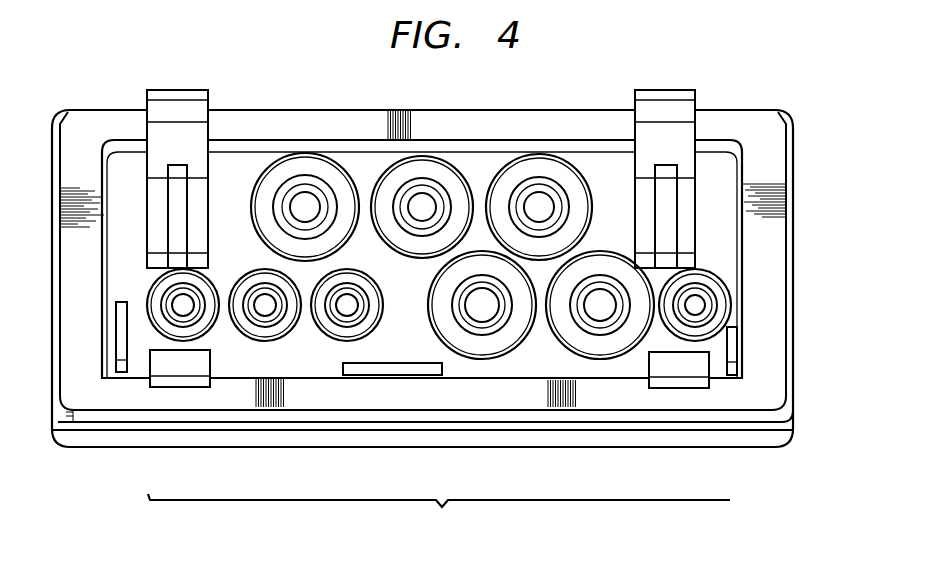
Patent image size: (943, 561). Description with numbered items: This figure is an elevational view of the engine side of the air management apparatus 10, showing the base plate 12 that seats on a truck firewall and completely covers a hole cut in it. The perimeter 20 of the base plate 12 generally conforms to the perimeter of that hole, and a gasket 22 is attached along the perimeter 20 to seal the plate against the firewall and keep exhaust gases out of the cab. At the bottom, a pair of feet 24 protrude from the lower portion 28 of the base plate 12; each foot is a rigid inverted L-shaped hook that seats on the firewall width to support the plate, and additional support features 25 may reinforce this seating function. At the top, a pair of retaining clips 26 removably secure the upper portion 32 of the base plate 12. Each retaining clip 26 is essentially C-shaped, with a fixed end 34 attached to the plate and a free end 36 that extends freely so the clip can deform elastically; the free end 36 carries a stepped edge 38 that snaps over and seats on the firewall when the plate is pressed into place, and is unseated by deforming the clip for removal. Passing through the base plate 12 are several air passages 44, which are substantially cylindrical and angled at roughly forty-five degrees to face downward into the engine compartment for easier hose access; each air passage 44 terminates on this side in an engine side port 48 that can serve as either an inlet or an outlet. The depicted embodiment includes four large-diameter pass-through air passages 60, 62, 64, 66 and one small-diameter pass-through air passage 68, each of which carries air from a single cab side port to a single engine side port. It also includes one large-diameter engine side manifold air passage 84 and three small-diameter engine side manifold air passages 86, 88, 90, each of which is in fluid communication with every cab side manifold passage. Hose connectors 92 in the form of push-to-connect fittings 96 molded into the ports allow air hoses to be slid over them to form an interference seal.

The air management apparatus 10 is at (590, 60).
The base plate 12 is at (794, 216).
The perimeter 20 is at (794, 334).
The gasket 22 is at (124, 396).
The feet 24 is at (177, 384).
The support features 25 is at (122, 301).
The retaining clips 26 is at (206, 131).
The lower portion 28 is at (796, 398).
The upper portion 32 is at (794, 152).
The fixed end 34 is at (147, 240).
The free end 36 is at (147, 103).
The stepped edge 38 is at (175, 92).
The air passages 44 is at (439, 516).
The engine side port 48 is at (556, 201).
The large-diameter pass-through air passage 60 is at (344, 163).
The large-diameter pass-through air passage 62 is at (462, 165).
The large-diameter pass-through air passage 64 is at (578, 166).
The large-diameter pass-through air passage 66 is at (561, 345).
The small-diameter pass-through air passage 68 is at (722, 283).
The large-diameter engine side manifold air passage 84 is at (430, 290).
The small-diameter engine side manifold air passage 86 is at (208, 332).
The small-diameter engine side manifold air passage 88 is at (290, 335).
The small-diameter engine side manifold air passage 90 is at (359, 342).
The hose connectors 92 is at (595, 337).
The push-to-connect fittings 96 is at (284, 198).